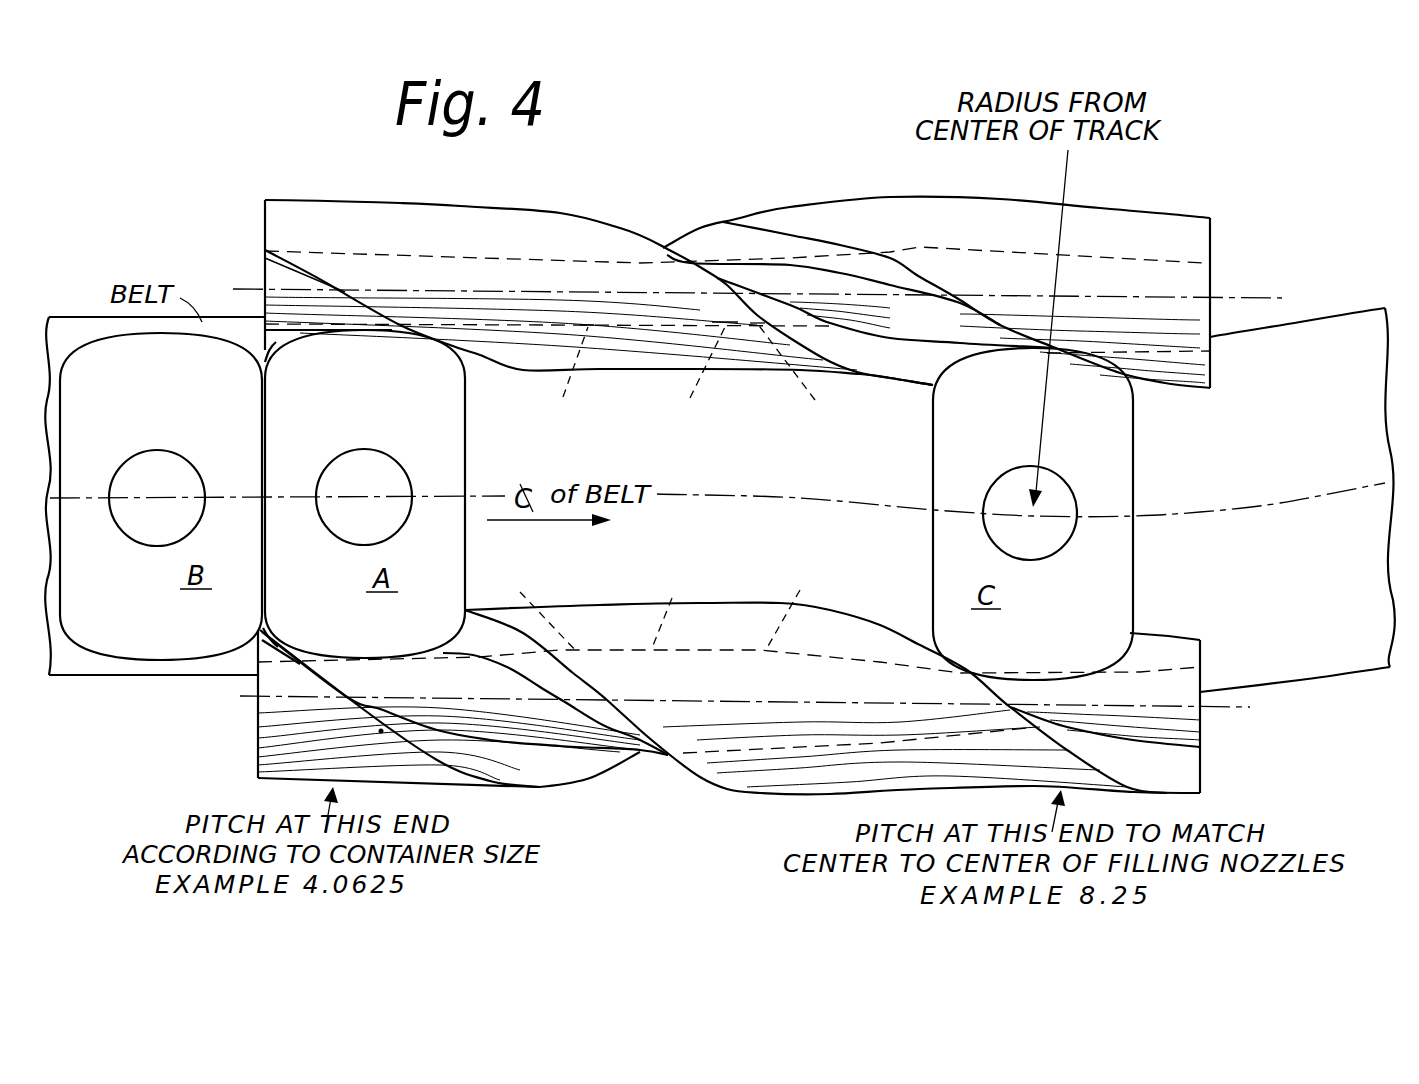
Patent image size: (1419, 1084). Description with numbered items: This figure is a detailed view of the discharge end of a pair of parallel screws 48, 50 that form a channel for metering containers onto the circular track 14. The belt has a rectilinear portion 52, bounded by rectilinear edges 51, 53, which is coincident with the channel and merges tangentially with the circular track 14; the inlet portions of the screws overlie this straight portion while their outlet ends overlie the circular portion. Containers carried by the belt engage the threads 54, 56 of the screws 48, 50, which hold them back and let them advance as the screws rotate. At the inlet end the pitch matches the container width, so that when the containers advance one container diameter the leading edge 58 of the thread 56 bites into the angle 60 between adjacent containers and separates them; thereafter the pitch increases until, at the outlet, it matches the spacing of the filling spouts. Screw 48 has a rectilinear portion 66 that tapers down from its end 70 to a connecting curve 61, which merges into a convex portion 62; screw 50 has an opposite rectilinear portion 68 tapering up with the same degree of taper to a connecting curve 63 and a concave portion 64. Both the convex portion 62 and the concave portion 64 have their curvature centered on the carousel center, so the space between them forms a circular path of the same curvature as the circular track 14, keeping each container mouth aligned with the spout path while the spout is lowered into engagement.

The circular track 14 is at (1222, 473).
The screw 48 is at (869, 162).
The screw 50 is at (745, 703).
The rectilinear edge 51 is at (213, 316).
The rectilinear portion 52 is at (741, 273).
The rectilinear edge 53 is at (165, 678).
The thread 54 is at (803, 215).
The thread 56 is at (757, 735).
The leading edge of the thread 58 is at (280, 338).
The angle between the containers 60 is at (260, 357).
The connecting curve 61 is at (737, 381).
The convex portion 62 is at (967, 337).
The connecting curve 63 is at (855, 657).
The concave portion 64 is at (1059, 690).
The rectilinear portion 66 is at (493, 437).
The rectilinear portion 68 is at (729, 618).
The end 70 is at (265, 263).